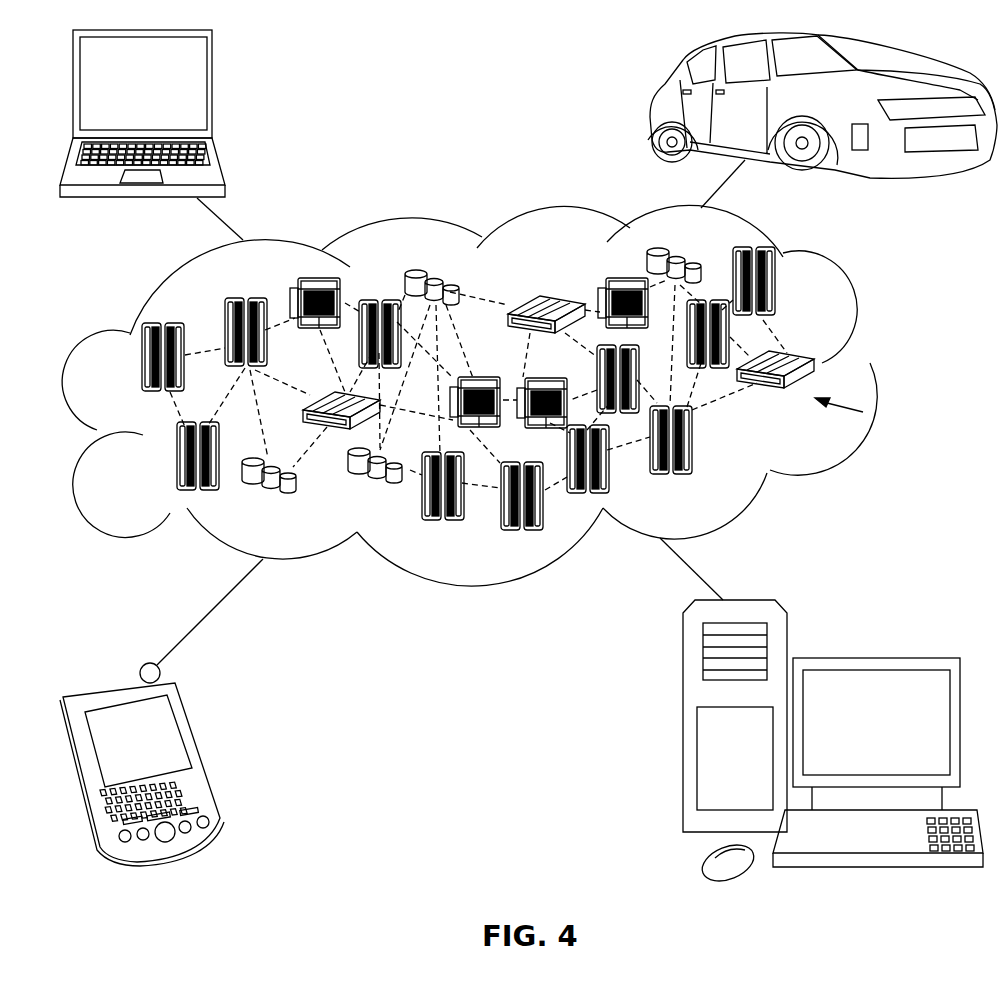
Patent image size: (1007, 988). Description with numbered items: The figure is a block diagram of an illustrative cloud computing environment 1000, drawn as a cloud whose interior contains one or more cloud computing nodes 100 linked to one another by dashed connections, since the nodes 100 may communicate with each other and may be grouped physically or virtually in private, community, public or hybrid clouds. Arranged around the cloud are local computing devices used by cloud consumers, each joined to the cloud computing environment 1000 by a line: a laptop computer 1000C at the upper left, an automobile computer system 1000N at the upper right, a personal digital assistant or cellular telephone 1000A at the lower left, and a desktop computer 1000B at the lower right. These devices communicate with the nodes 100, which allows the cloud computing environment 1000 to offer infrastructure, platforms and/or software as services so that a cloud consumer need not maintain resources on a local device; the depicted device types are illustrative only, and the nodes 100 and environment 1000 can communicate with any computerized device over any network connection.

The cloud computing nodes 100 is at (863, 412).
The cloud computing environment 1000 is at (872, 366).
The personal digital assistant or cellular telephone 1000A is at (203, 753).
The desktop computer 1000B is at (873, 658).
The laptop computer 1000C is at (213, 92).
The automobile computer system 1000N is at (652, 110).